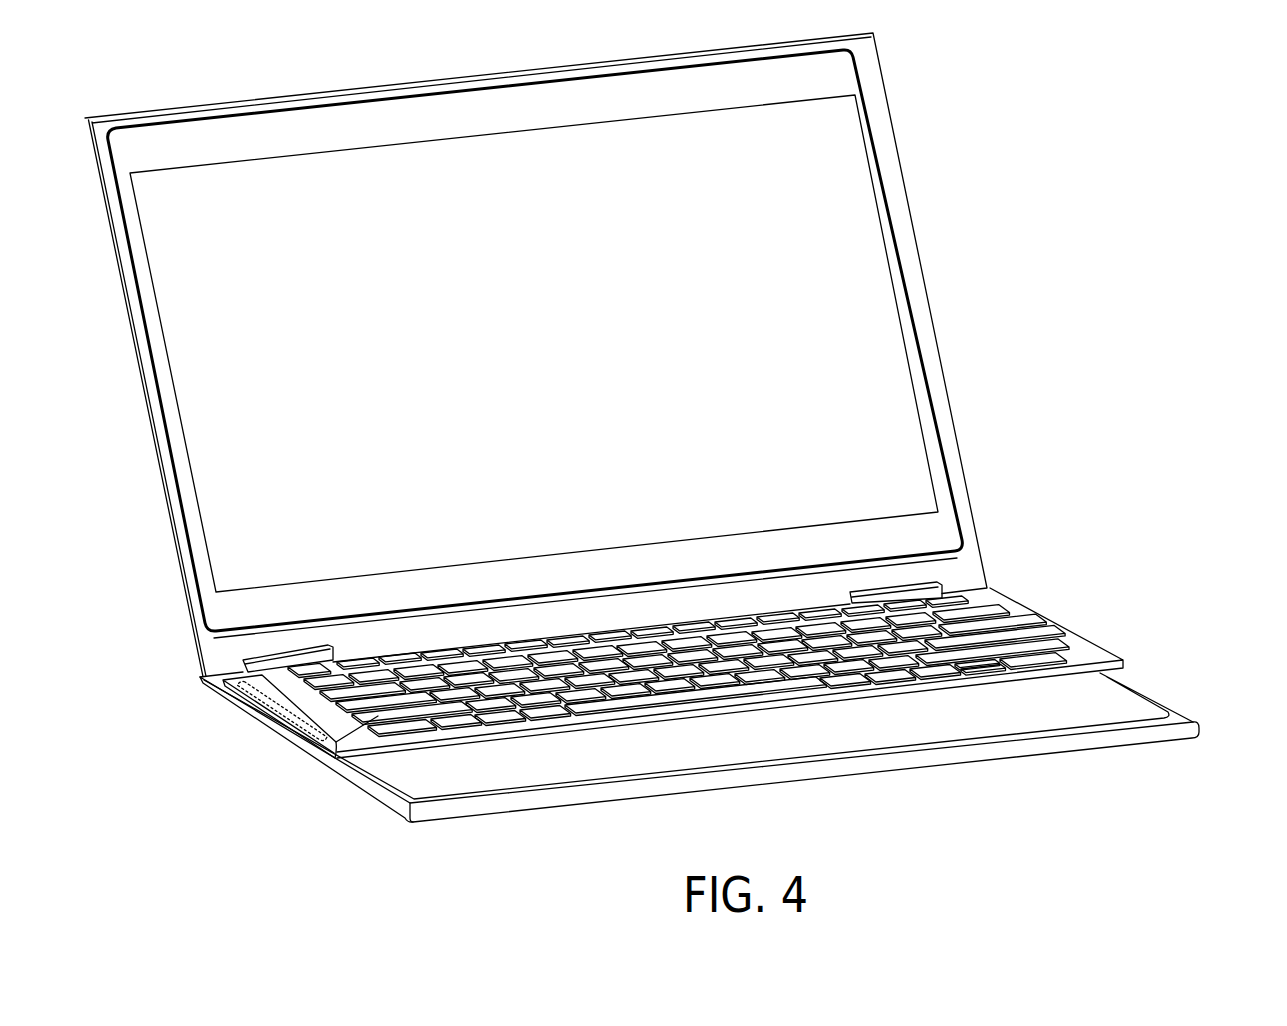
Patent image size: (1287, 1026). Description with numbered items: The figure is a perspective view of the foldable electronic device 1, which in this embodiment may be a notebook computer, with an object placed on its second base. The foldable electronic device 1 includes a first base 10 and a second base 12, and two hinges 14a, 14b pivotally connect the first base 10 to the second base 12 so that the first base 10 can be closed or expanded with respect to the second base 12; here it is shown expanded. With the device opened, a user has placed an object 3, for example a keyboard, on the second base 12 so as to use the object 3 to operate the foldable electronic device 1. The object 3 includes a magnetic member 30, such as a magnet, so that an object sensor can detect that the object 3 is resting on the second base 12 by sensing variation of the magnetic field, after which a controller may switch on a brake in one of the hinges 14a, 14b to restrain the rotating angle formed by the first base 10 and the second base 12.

The foldable electronic device 1 is at (985, 60).
The first base 10 is at (227, 102).
The second base 12 is at (1162, 700).
The hinge 14a is at (287, 660).
The hinge 14b is at (920, 597).
The object 3 is at (1050, 628).
The magnetic member 30 is at (290, 710).